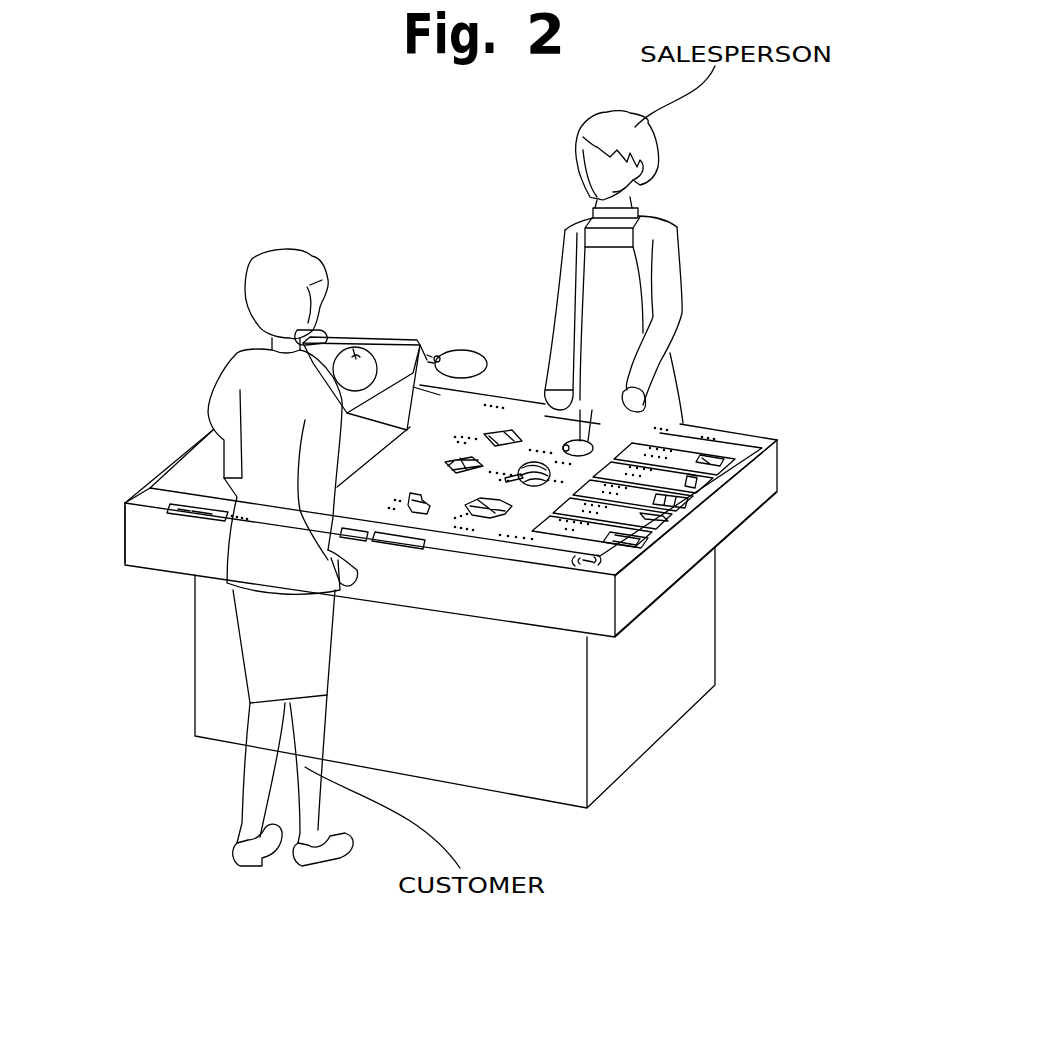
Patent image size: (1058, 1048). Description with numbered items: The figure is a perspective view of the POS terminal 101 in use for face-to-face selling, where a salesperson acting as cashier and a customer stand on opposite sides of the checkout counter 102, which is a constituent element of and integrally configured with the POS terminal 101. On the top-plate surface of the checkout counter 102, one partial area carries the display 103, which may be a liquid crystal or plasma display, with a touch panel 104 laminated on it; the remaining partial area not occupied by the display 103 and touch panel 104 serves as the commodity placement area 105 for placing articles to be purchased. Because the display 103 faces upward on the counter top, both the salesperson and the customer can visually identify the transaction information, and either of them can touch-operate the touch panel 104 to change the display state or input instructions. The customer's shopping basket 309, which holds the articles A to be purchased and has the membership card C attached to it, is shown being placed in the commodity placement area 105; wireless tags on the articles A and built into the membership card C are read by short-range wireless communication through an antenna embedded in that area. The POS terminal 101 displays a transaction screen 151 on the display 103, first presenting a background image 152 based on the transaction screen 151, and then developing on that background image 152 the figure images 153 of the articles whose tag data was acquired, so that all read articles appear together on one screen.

The POS terminal 101 is at (805, 415).
The checkout counter 102 is at (135, 530).
The display 103 is at (740, 460).
The touch panel 104 is at (740, 477).
The commodity placement area 105 is at (180, 473).
The transaction screen 151 is at (597, 457).
The background image 152 is at (637, 388).
The figure images 153 is at (540, 468).
The shopping basket 309 is at (335, 338).
The articles A is at (370, 348).
The membership card C is at (460, 362).